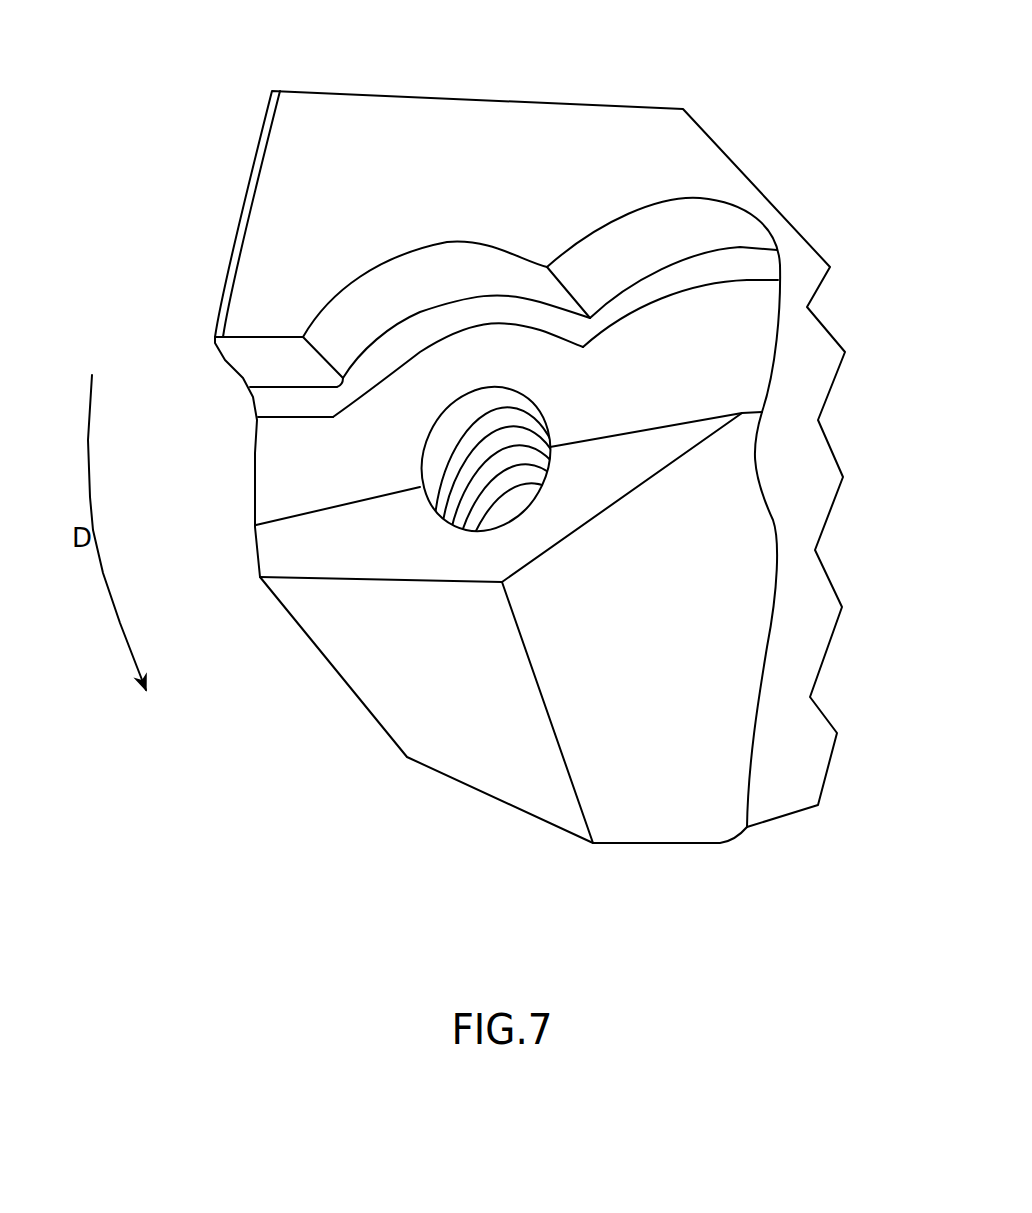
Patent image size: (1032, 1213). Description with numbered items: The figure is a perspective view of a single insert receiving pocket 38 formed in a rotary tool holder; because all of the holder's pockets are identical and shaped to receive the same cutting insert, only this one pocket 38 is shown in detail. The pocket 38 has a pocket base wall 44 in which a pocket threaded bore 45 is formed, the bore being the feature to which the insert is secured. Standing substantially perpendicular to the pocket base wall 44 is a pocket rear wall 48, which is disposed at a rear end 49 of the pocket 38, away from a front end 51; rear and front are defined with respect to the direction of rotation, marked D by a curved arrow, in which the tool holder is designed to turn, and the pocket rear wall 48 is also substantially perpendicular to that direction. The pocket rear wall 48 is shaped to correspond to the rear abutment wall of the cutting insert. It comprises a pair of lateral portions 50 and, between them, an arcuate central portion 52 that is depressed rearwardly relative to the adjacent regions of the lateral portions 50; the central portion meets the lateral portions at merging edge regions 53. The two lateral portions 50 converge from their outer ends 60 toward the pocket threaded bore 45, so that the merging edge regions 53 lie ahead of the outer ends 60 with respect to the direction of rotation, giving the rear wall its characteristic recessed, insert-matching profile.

The insert receiving pocket 38 is at (318, 815).
The pocket base wall 44 is at (677, 382).
The pocket threaded bore 45 is at (436, 511).
The pocket rear wall 48 is at (600, 277).
The rear end 49 is at (292, 304).
The lateral portions 50 is at (633, 248).
The front end 51 is at (478, 551).
The arcuate central portion 52 is at (382, 300).
The merging edge regions 53 is at (573, 300).
The outer ends 60 is at (683, 223).